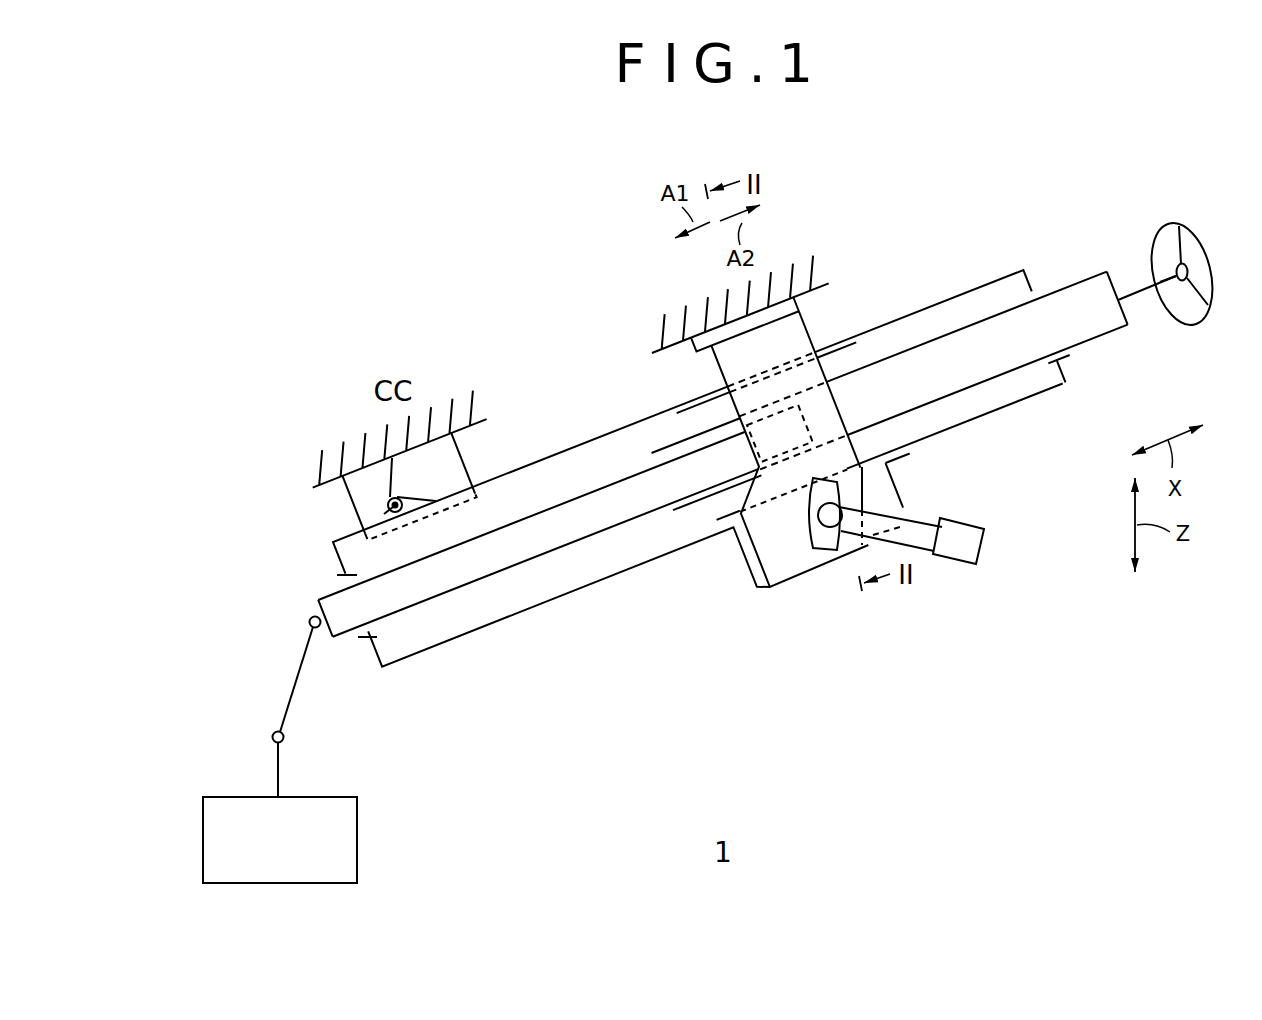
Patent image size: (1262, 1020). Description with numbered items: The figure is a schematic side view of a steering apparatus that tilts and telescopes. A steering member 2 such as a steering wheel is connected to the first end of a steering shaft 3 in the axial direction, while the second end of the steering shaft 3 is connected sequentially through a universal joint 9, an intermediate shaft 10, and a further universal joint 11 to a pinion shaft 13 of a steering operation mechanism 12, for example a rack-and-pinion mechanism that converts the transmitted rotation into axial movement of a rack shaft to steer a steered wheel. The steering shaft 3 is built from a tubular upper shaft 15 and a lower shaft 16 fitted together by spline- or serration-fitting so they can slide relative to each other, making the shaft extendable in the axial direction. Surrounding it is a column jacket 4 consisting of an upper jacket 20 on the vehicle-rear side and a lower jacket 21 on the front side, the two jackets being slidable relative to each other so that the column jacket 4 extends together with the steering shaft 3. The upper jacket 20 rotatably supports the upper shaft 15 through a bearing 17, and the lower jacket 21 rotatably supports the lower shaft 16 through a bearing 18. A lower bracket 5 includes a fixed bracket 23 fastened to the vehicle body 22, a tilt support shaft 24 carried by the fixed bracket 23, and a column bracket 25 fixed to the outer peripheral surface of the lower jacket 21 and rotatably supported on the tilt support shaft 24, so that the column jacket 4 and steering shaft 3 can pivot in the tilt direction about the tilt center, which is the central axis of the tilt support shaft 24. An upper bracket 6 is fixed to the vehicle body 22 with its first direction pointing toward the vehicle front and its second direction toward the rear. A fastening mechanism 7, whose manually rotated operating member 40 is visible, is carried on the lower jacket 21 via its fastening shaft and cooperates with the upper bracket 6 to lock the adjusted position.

The steering member 2 is at (1172, 226).
The steering shaft 3 is at (1084, 270).
The column jacket 4 is at (590, 434).
The lower bracket 5 is at (466, 441).
The upper bracket 6 is at (818, 327).
The fastening mechanism 7 is at (903, 511).
The universal joint 9 is at (309, 621).
The intermediate shaft 10 is at (297, 681).
The universal joint 11 is at (272, 737).
The steering operation mechanism 12 is at (358, 842).
The pinion shaft 13 is at (282, 775).
The upper shaft 15 is at (1105, 342).
The lower shaft 16 is at (455, 590).
The bearing 17 is at (1033, 291).
The bearing 18 is at (340, 576).
The upper jacket 20 is at (1028, 398).
The lower jacket 21 is at (542, 606).
The vehicle body 22 is at (437, 418).
The fixed bracket 23 is at (450, 474).
The tilt support shaft 24 is at (388, 506).
The column bracket 25 is at (390, 517).
The operating member 40 is at (955, 560).